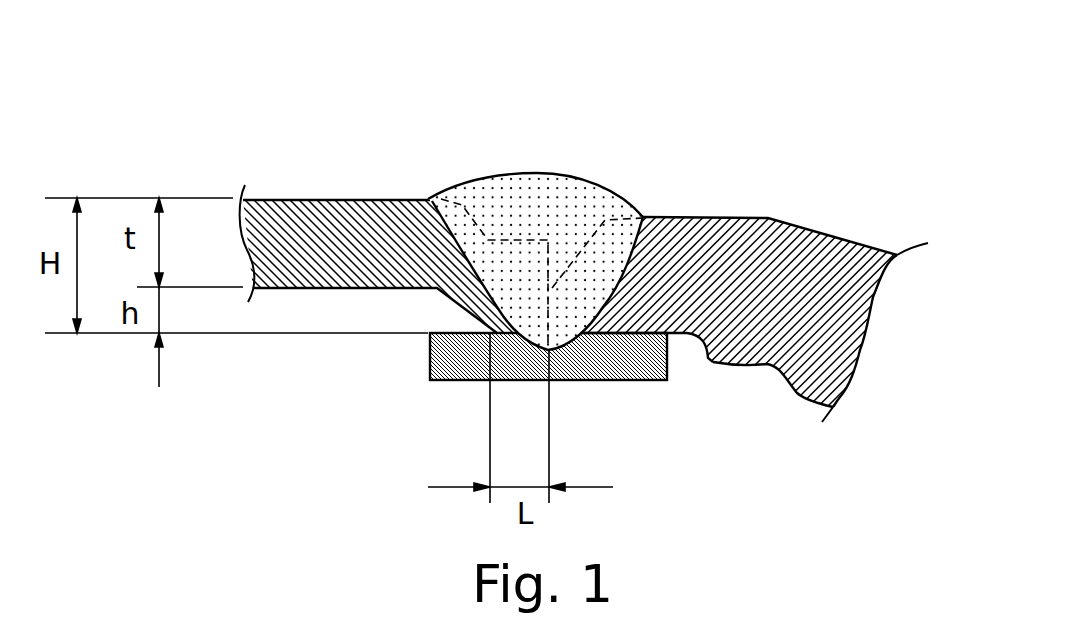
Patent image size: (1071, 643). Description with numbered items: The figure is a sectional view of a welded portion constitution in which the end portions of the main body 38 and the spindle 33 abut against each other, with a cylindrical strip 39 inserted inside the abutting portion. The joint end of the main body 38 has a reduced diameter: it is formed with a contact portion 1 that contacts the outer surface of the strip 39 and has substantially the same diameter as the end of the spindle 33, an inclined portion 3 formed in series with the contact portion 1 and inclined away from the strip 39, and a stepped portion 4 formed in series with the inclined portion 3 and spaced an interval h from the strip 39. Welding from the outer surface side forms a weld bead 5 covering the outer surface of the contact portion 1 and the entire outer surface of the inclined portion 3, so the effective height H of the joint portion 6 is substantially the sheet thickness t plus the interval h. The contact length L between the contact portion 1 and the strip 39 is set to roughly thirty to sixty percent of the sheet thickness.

The contact portion 1 is at (528, 260).
The inclined portion 3 is at (472, 217).
The stepped portion 4 is at (368, 205).
The weld bead 5 is at (587, 180).
The joint portion 6 is at (553, 88).
The spindle 33 is at (808, 227).
The main body 38 is at (297, 193).
The cylindrical strip 39 is at (600, 380).